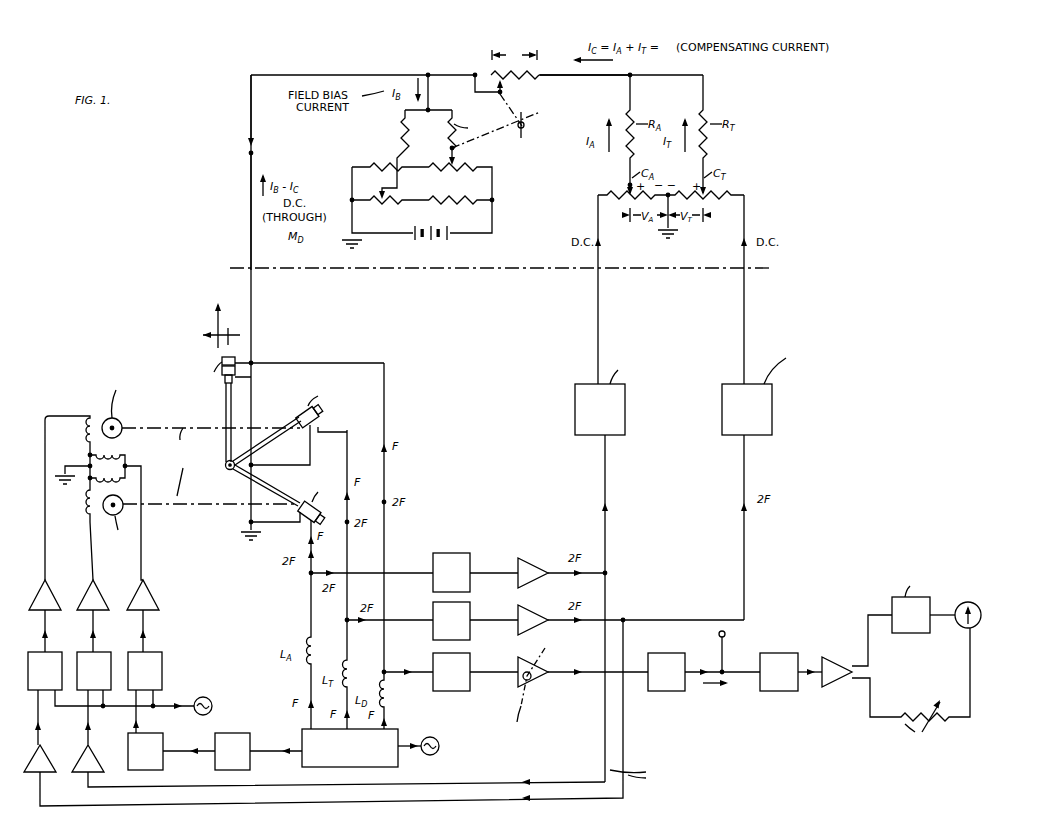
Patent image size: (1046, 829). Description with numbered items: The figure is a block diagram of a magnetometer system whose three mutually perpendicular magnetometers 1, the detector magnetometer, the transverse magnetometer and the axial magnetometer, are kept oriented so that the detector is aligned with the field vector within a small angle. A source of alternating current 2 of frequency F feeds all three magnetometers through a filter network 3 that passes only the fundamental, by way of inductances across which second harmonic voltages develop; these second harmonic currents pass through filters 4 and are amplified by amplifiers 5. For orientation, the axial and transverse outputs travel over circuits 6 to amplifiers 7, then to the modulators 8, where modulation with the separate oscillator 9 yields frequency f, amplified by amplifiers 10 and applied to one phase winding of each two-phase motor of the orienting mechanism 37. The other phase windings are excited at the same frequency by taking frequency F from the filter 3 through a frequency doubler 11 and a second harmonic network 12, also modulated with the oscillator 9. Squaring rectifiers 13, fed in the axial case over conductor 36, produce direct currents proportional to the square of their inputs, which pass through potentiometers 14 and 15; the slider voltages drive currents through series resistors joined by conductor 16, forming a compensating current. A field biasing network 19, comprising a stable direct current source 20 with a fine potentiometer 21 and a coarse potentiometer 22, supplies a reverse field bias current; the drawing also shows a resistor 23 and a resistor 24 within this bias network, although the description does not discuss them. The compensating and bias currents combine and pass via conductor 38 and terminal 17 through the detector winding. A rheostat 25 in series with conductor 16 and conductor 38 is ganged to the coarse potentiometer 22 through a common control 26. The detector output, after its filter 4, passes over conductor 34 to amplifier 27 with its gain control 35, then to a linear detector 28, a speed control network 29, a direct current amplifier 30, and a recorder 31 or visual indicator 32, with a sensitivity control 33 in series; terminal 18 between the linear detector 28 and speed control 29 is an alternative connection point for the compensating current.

The magnetometers 1 is at (284, 413).
The source of alternating current 2 is at (439, 737).
The filter network 3 is at (399, 732).
The filters 4 is at (450, 612).
The amplifiers 5 is at (513, 622).
The circuits 6 is at (623, 721).
The amplifiers 7 is at (81, 774).
The modulators 8 is at (87, 650).
The oscillator 9 is at (197, 695).
The amplifiers 10 is at (130, 592).
The frequency doubler 11 is at (232, 770).
The network 12 is at (163, 737).
The squaring rectifiers 13 is at (726, 412).
The potentiometer 14 is at (614, 190).
The potentiometer 15 is at (732, 191).
The conductor 16 is at (586, 75).
The terminal 17 is at (251, 153).
The terminal 18 is at (726, 635).
The field biasing network 19 is at (451, 146).
The direct current source 20 is at (423, 243).
The potentiometer 21 is at (391, 194).
The potentiometer 22 is at (485, 156).
The resistor 23 is at (422, 207).
The resistor 24 is at (380, 167).
The rheostat 25 is at (507, 76).
The common control 26 is at (533, 118).
The amplifier 27 is at (525, 686).
The linear detector 28 is at (669, 653).
The speed control network 29 is at (778, 653).
The direct current amplifier 30 is at (838, 686).
The recorder 31 is at (909, 633).
The visual indicator 32 is at (979, 624).
The sensitivity control 33 is at (917, 708).
The conductor 34 is at (500, 670).
The gain control 35 is at (526, 684).
The conductor 36 is at (600, 459).
The orienting mechanism 37 is at (172, 471).
The conductor 38 is at (251, 93).